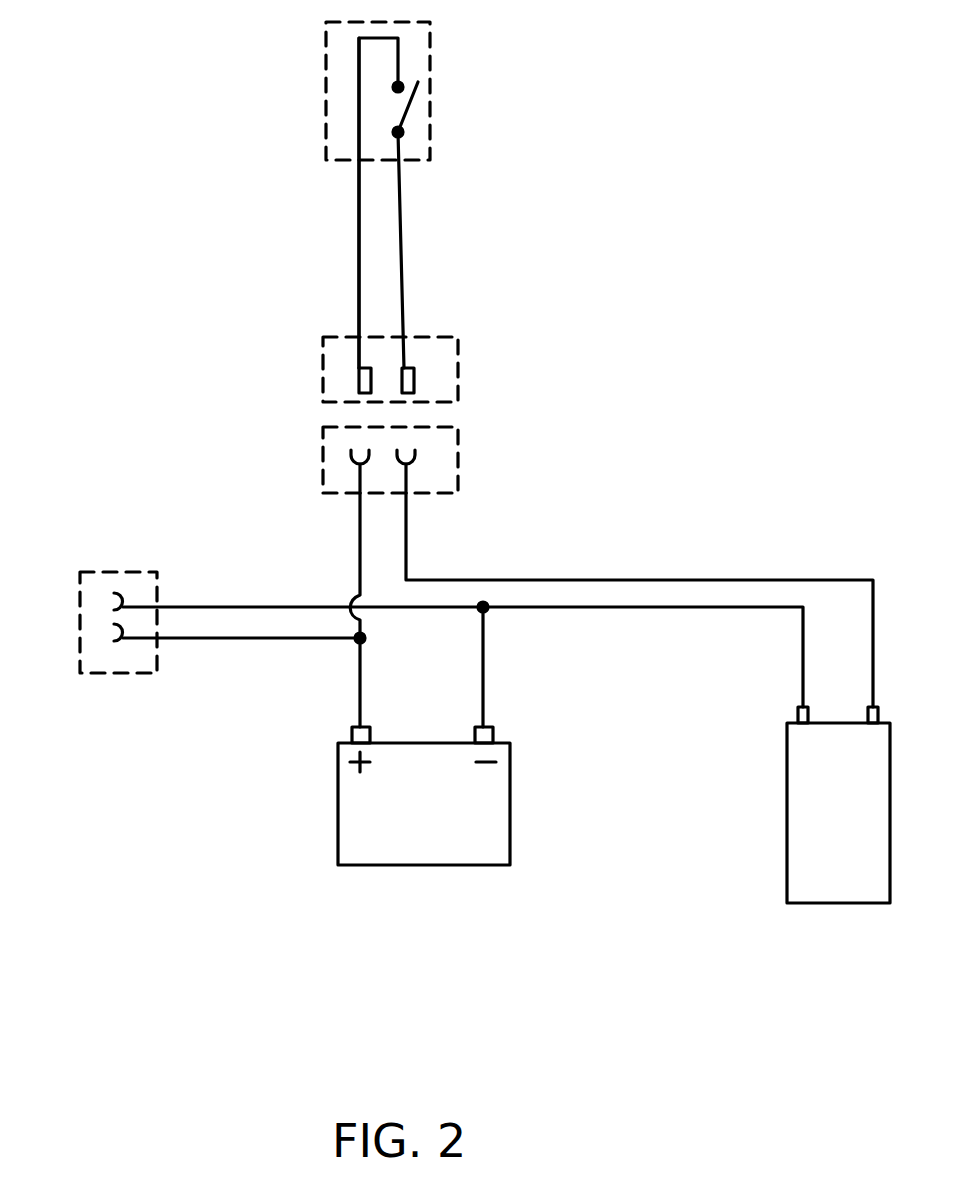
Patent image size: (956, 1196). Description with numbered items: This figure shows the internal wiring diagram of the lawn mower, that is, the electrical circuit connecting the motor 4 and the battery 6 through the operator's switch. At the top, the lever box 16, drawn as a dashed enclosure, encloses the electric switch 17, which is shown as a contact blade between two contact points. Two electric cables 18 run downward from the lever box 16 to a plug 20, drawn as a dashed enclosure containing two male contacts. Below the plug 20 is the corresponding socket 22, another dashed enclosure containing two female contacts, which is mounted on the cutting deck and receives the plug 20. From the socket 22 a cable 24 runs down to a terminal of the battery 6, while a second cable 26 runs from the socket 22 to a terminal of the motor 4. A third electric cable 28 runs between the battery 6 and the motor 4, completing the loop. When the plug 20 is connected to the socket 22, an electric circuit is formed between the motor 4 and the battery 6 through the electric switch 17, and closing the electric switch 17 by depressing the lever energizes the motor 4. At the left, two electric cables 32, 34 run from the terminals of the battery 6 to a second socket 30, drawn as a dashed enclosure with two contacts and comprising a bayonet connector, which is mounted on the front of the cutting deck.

The motor 4 is at (840, 875).
The battery 6 is at (458, 835).
The lever box 16 is at (326, 48).
The electric switch 17 is at (409, 106).
The electric cables 18 is at (358, 245).
The plug 20 is at (458, 370).
The socket 22 is at (458, 465).
The cable 24 is at (358, 540).
The second cable 26 is at (772, 578).
The third electric cable 28 is at (620, 608).
The second socket 30 is at (95, 572).
The electric cable 32 is at (222, 607).
The electric cable 34 is at (233, 640).